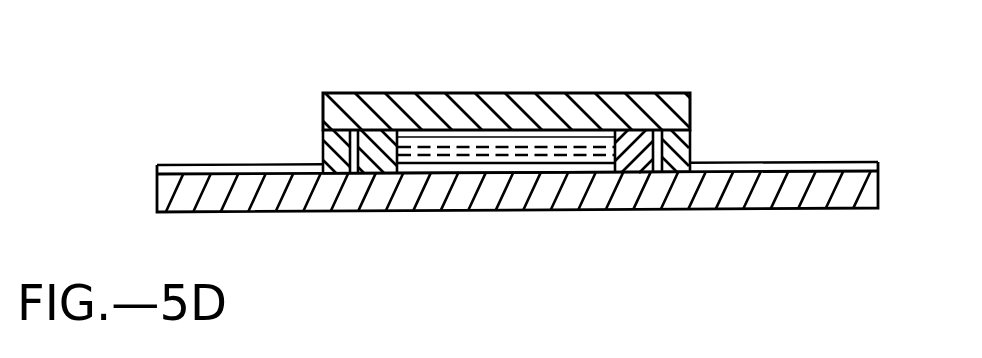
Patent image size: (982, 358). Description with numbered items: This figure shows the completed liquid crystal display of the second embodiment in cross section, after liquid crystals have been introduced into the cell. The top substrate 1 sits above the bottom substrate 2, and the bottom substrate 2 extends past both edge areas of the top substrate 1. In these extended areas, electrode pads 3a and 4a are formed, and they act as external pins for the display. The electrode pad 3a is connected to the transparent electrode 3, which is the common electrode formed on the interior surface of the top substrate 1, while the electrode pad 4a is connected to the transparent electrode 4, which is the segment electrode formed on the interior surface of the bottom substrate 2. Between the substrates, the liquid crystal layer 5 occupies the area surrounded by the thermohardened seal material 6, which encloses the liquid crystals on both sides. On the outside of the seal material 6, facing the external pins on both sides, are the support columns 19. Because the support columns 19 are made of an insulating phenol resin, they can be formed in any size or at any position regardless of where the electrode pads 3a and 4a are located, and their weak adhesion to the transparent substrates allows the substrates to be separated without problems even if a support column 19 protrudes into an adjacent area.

The top substrate 1 is at (506, 98).
The bottom substrate 2 is at (572, 210).
The transparent electrode 3 is at (448, 128).
The electrode pad 3a is at (192, 165).
The transparent electrode 4 is at (433, 172).
The electrode pad 4a is at (795, 162).
The liquid crystal layer 5 is at (583, 148).
The seal material 6 is at (378, 129).
The support column 19 is at (670, 100).